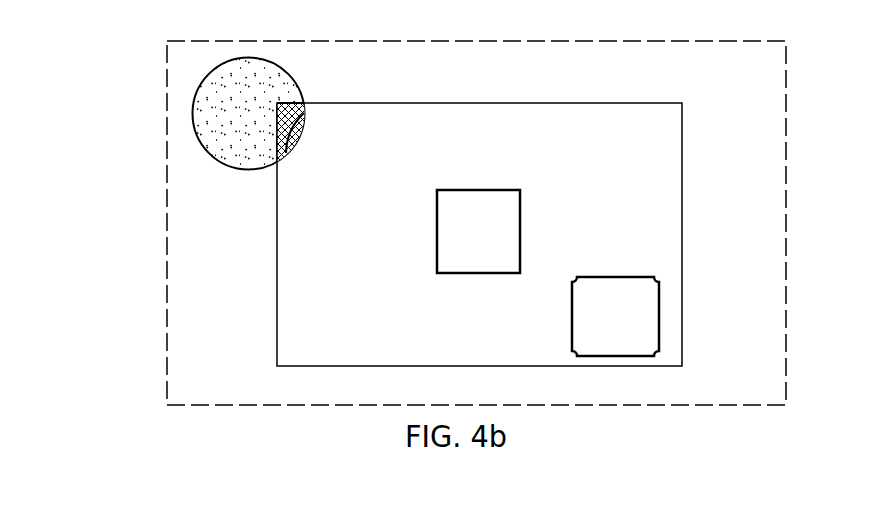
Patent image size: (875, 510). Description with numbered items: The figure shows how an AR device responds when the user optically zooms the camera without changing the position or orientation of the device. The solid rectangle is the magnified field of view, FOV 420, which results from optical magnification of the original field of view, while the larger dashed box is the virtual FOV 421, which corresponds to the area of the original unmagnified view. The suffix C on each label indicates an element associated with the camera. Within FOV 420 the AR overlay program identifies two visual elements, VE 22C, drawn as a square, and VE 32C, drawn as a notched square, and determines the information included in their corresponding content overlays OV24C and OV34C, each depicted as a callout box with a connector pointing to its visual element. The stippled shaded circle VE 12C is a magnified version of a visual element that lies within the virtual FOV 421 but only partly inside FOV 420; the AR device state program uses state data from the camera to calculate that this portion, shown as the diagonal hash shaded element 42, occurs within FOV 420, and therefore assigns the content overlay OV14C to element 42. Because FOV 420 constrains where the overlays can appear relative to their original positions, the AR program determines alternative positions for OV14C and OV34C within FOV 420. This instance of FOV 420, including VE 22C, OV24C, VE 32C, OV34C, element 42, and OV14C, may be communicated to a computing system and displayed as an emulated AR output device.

The virtual FOV 421 is at (786, 70).
The FOV 420 is at (682, 143).
The VE 12C is at (249, 114).
The element 42 is at (287, 153).
The content overlay OV14C is at (304, 121).
The VE 22C is at (478, 231).
The content overlay OV24C is at (520, 190).
The VE 32C is at (615, 316).
The content overlay OV34C is at (594, 277).